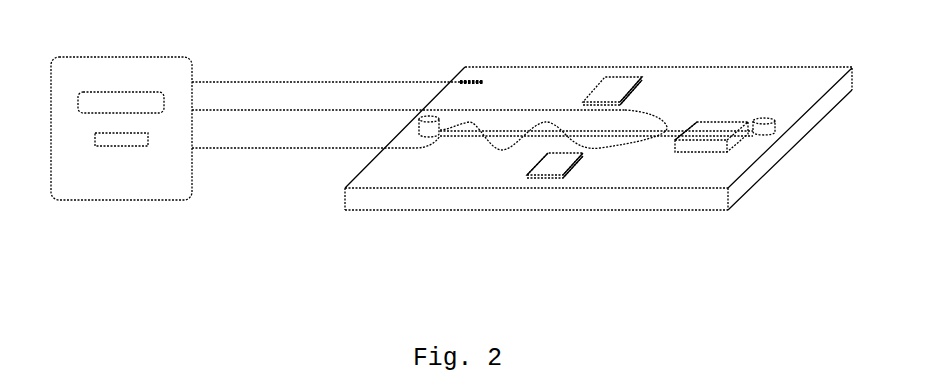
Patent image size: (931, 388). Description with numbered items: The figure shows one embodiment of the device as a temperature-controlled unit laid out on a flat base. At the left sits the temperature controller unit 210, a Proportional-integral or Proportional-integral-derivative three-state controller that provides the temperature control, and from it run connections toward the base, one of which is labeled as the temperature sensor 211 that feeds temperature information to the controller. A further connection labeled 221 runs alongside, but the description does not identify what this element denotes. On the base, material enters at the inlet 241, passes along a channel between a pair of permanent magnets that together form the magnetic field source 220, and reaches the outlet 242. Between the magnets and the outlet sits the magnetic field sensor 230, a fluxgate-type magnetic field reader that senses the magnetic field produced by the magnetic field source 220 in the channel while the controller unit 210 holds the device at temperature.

The temperature controller unit 210 is at (121, 128).
The temperature sensor 211 is at (385, 79).
The optical fibers / second optical paths 221 is at (297, 146).
The inlet 241 is at (412, 126).
The magnetic field source 220 is at (617, 69).
The magnetic field sensor 230 is at (709, 116).
The outlet 242 is at (779, 133).